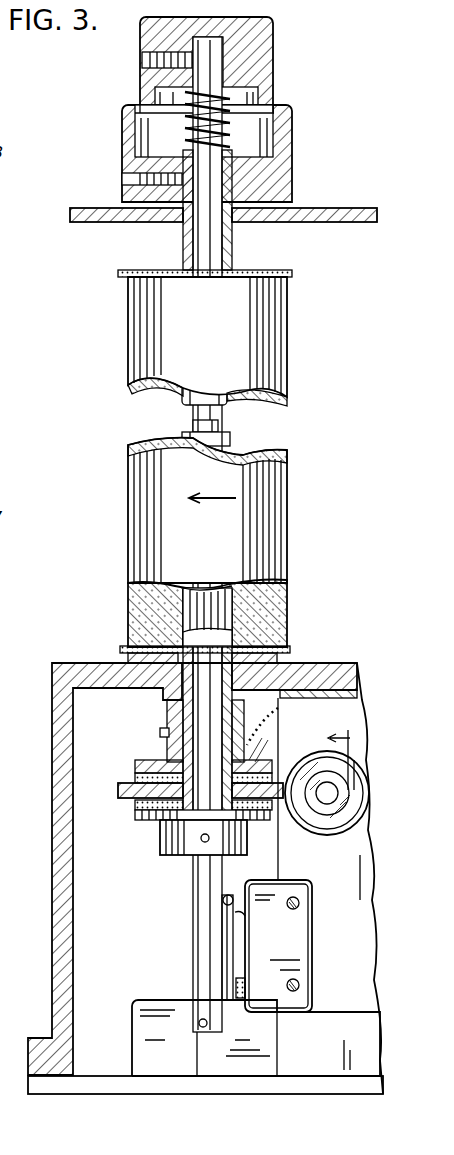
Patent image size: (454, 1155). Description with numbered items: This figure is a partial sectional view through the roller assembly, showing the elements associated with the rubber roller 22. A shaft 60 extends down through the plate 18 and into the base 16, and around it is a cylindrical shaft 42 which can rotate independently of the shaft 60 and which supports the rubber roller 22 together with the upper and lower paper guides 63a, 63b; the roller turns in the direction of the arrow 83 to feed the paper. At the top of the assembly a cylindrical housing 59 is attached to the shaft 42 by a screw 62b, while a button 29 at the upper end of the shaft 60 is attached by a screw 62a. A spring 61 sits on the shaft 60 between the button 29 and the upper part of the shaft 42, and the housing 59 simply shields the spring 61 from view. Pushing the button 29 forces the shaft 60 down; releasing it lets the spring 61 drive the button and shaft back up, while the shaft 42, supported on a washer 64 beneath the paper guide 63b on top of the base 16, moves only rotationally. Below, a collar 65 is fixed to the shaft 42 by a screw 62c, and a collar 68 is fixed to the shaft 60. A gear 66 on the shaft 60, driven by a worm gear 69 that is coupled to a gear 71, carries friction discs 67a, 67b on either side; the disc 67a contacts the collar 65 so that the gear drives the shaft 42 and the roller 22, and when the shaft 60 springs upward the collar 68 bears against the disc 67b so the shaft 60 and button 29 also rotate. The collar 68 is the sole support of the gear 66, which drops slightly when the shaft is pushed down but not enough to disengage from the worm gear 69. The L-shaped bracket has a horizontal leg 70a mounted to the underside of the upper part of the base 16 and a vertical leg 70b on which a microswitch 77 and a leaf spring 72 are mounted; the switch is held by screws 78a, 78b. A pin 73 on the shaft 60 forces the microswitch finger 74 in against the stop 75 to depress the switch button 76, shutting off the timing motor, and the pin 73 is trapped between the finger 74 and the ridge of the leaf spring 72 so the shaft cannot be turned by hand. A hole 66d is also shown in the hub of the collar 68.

The base 16 is at (52, 716).
The plate 18 is at (350, 212).
The rubber roller 22 is at (288, 322).
The button 29 is at (268, 48).
The cylindrical shaft 42 is at (232, 250).
The cylindrical housing 59 is at (293, 138).
The shaft 60 is at (208, 70).
The spring 61 is at (185, 132).
The screw 62a is at (142, 60).
The screw 62b is at (122, 179).
The screw 62c is at (162, 730).
The upper paper guide 63a is at (118, 271).
The lower paper guide 63b is at (120, 647).
The washer 64 is at (278, 658).
The collar 65 is at (143, 760).
The gear 66 is at (118, 792).
The hole 66d is at (202, 842).
The friction disc 67a is at (135, 778).
The friction disc 67b is at (135, 806).
The collar 68 is at (145, 822).
The worm gear 69 is at (304, 836).
The horizontal leg 70a is at (336, 676).
The vertical leg 70b is at (362, 960).
The gear 71 is at (262, 738).
The leaf spring 72 is at (132, 1002).
The pin 73 is at (198, 1023).
The microswitch finger 74 is at (222, 958).
The stop 75 is at (242, 1000).
The button 76 is at (240, 922).
The microswitch 77 is at (312, 932).
The screw 78a is at (299, 902).
The screw 78b is at (299, 985).
The arrow 83 is at (210, 501).